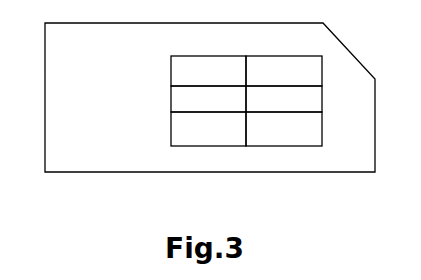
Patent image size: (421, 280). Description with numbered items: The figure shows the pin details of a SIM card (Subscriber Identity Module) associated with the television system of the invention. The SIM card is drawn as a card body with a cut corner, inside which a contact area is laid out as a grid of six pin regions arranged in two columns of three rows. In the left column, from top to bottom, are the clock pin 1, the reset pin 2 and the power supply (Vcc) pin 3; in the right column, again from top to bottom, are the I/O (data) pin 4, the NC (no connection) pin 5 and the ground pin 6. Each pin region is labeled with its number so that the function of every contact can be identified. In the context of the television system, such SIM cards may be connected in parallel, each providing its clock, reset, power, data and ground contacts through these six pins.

The clock pin 1 is at (208, 71).
The reset pin 2 is at (208, 99).
The power supply (Vcc) pin 3 is at (208, 129).
The I/O (data) pin 4 is at (284, 71).
The NC (no connection) pin 5 is at (284, 99).
The ground pin 6 is at (284, 129).